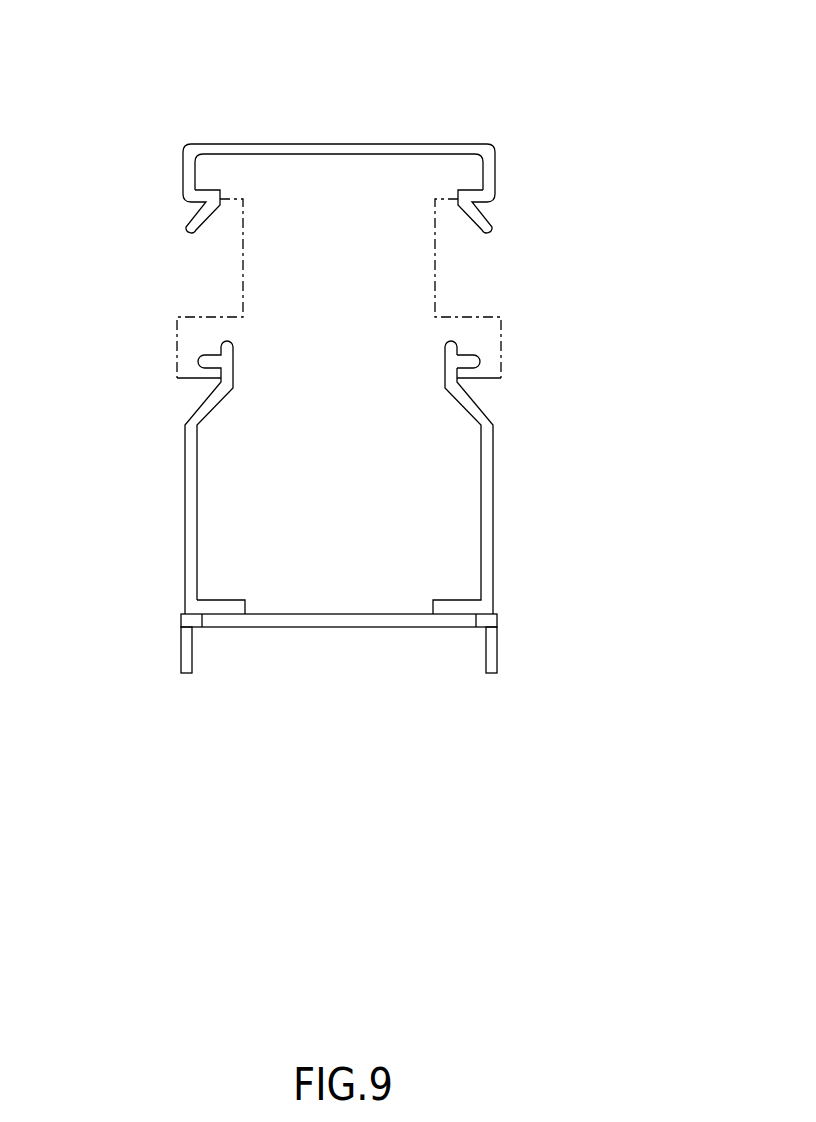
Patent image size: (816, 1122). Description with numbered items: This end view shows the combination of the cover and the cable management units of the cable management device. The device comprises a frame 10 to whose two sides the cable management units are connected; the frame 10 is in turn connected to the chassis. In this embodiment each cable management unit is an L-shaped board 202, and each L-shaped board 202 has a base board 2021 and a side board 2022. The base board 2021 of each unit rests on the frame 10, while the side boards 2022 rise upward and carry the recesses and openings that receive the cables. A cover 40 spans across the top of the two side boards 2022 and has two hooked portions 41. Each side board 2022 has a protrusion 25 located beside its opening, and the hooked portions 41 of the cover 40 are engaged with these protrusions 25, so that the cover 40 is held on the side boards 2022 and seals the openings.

The cover 40 is at (338, 144).
The hooked portion 41 is at (480, 187).
The protrusion 25 is at (474, 360).
The L-shaped board 202 is at (494, 522).
The side board 2022 is at (192, 557).
The base board 2021 is at (223, 610).
The frame 10 is at (322, 620).